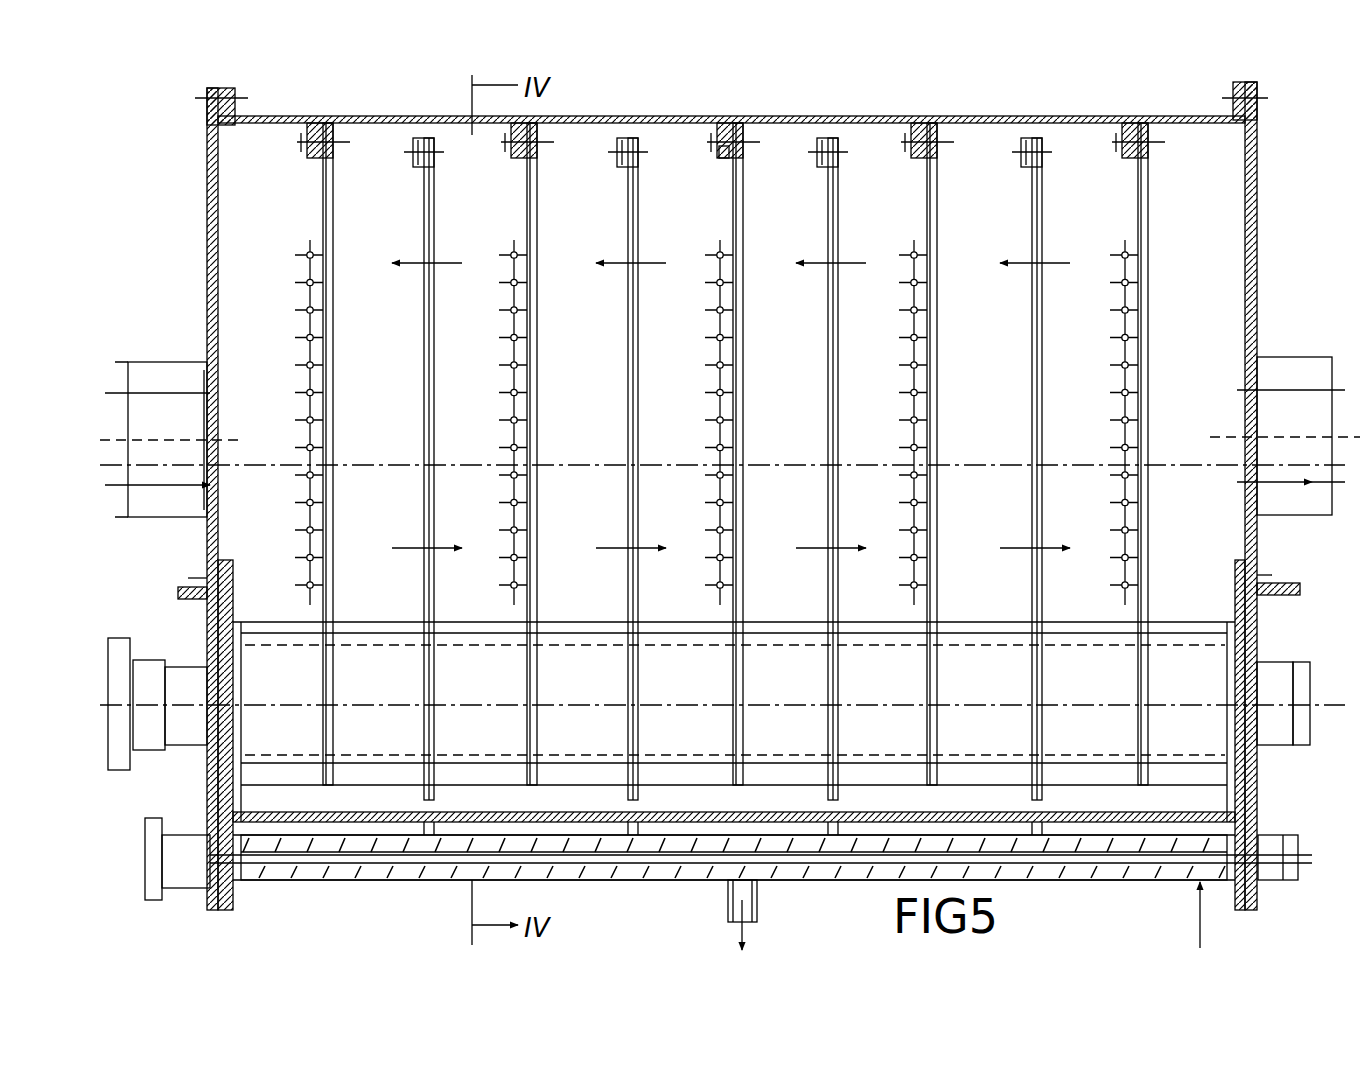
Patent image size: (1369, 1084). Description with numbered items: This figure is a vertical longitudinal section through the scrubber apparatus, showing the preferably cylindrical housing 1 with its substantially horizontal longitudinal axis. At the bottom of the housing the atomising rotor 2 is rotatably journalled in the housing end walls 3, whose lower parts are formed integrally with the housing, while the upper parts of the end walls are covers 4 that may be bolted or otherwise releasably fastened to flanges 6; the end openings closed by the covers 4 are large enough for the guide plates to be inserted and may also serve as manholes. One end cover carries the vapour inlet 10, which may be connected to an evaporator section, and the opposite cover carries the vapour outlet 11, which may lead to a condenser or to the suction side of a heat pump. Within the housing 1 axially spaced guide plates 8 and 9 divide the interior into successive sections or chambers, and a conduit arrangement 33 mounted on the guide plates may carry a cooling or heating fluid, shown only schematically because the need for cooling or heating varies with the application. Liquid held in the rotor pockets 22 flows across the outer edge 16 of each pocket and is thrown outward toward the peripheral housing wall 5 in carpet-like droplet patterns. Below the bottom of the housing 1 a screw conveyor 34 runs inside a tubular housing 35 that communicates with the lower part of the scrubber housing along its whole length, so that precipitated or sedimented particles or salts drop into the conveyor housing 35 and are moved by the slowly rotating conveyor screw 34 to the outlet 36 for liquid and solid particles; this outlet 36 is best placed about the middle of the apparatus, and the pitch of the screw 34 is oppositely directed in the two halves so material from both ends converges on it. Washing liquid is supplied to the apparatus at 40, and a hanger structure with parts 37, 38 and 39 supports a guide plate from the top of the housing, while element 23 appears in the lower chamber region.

The housing 1 is at (731, 489).
The rotor 2 is at (722, 722).
The housing end walls 3 is at (225, 590).
The covers 4 is at (214, 232).
The peripheral housing wall 5 is at (1047, 117).
The flanges 6 is at (1233, 99).
The guide plate 8 is at (432, 322).
The guide plate 9 is at (333, 323).
The vapour inlet 10 is at (170, 439).
The vapour outlet 11 is at (1285, 436).
The outer edge of rotor pocket 16 is at (650, 625).
The rotor pocket 22 is at (762, 628).
The trough top plate 23 is at (622, 650).
The conduit arrangement 33 is at (304, 287).
The screw conveyor 34 is at (398, 860).
The tubular housing 35 is at (450, 882).
The outlet for solids 36 is at (728, 905).
The hanger block 37 is at (717, 140).
The bolt 38 is at (745, 152).
The support element 39 is at (719, 158).
The washing liquid supply 40 is at (1198, 905).